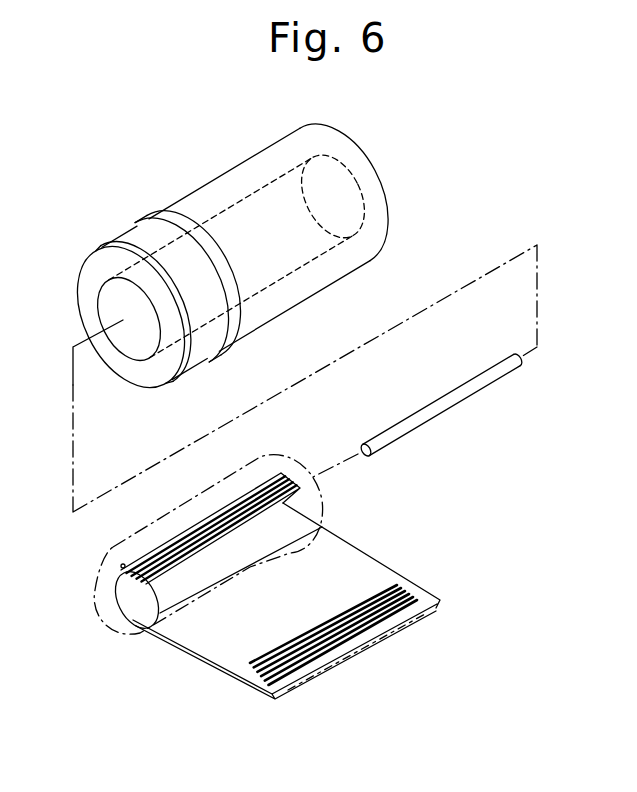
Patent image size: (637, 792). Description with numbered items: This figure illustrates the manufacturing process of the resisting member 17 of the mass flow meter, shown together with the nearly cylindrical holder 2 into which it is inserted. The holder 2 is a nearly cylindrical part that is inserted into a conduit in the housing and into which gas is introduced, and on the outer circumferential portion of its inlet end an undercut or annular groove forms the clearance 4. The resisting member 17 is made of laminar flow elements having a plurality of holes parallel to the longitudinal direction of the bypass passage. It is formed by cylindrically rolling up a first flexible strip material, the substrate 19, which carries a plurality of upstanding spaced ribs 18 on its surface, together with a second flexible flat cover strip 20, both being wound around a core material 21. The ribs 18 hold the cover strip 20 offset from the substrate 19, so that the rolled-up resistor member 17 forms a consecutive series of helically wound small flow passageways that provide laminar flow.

The holder 2 is at (230, 182).
The clearance 4 is at (134, 234).
The resisting member 17 is at (108, 614).
The ribs 18 is at (398, 586).
The substrate 19 is at (253, 690).
The cover strip 20 is at (205, 662).
The core material 21 is at (462, 408).